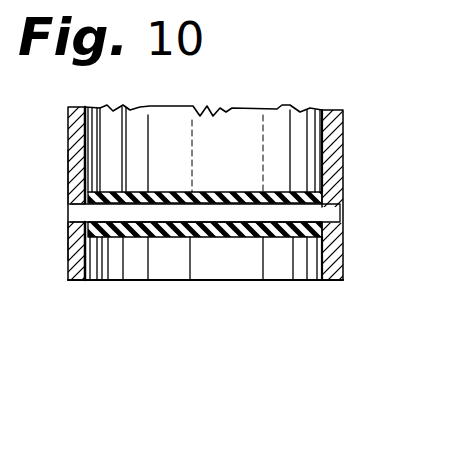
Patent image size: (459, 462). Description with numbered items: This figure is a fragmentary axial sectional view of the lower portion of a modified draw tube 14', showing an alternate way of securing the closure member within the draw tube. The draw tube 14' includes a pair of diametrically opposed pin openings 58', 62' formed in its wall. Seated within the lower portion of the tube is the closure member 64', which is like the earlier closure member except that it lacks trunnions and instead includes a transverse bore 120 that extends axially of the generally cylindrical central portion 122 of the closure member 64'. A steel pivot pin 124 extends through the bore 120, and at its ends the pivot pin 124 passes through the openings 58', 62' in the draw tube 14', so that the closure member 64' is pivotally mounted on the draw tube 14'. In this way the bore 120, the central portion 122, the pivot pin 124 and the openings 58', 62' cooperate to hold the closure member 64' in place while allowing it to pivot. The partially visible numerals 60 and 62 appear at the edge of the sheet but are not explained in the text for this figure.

The draw tube 14' is at (237, 198).
The pin opening 58' is at (45, 176).
The element 60 is at (34, 178).
The element 62 is at (34, 238).
The pin opening 62' is at (237, 197).
The closure member 64' is at (159, 285).
The transverse bore 120 is at (153, 230).
The central portion 122 is at (248, 192).
The pivot pin 124 is at (270, 240).